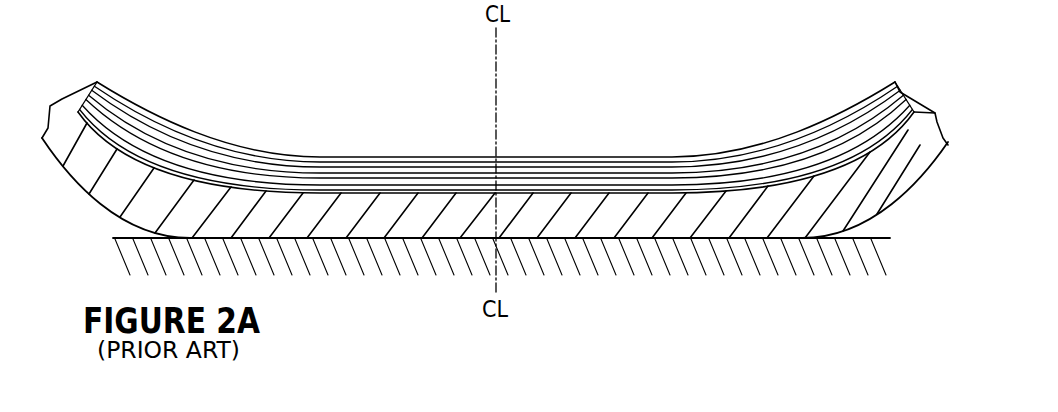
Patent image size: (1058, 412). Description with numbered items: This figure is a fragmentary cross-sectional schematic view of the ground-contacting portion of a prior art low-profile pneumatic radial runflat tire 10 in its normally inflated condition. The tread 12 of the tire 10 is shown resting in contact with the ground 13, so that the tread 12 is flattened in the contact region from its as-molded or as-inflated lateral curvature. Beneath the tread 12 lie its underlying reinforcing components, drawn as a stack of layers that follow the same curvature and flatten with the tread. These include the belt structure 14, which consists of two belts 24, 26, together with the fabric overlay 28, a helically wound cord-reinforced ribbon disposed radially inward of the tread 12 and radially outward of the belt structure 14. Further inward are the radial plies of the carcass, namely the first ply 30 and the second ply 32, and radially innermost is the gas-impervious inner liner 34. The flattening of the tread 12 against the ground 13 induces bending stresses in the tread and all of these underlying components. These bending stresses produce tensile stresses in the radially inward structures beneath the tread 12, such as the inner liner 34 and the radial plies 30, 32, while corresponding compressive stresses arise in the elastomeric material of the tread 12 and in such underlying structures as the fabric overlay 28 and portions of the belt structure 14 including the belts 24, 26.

The runflat tire 10 is at (907, 208).
The tread 12 is at (300, 228).
The ground 13 is at (452, 246).
The belt structure 14 is at (612, 240).
The belt 24 is at (372, 193).
The belt 26 is at (413, 178).
The fabric overlay 28 is at (612, 243).
The first ply 30 is at (663, 167).
The second ply 32 is at (685, 175).
The inner liner 34 is at (635, 162).